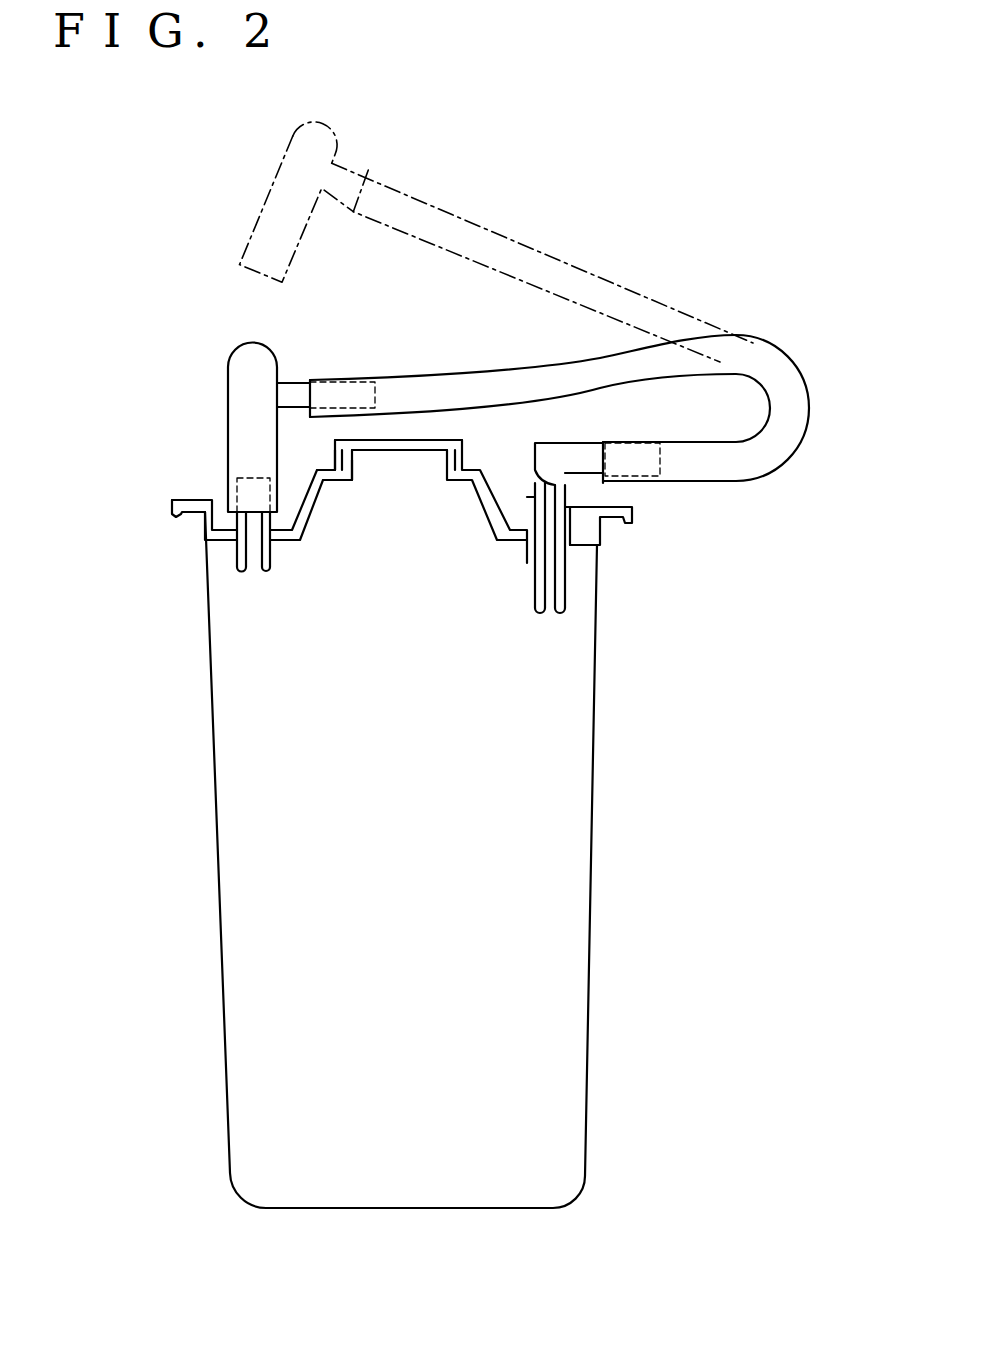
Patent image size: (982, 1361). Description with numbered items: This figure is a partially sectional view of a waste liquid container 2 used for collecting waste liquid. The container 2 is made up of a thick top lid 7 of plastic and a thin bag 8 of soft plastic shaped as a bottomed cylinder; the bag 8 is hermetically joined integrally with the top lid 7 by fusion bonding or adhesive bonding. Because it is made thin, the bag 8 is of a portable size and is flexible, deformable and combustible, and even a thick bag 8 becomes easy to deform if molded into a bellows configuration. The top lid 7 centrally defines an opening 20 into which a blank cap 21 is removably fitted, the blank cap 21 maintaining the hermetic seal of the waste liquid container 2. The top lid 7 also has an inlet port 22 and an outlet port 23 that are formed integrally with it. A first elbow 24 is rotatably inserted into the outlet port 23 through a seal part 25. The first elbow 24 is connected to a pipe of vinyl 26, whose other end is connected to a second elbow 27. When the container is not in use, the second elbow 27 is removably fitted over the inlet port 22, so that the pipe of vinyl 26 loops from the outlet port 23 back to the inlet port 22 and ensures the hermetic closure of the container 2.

The waste liquid container 2 is at (168, 473).
The top lid 7 is at (172, 507).
The bag 8 is at (212, 713).
The opening 20 is at (347, 470).
The blank cap 21 is at (417, 462).
The inlet port 22 is at (263, 573).
The outlet port 23 is at (528, 560).
The first elbow 24 is at (587, 463).
The seal part 25 is at (559, 517).
The pipe of vinyl 26 is at (806, 435).
The second elbow 27 is at (230, 365).